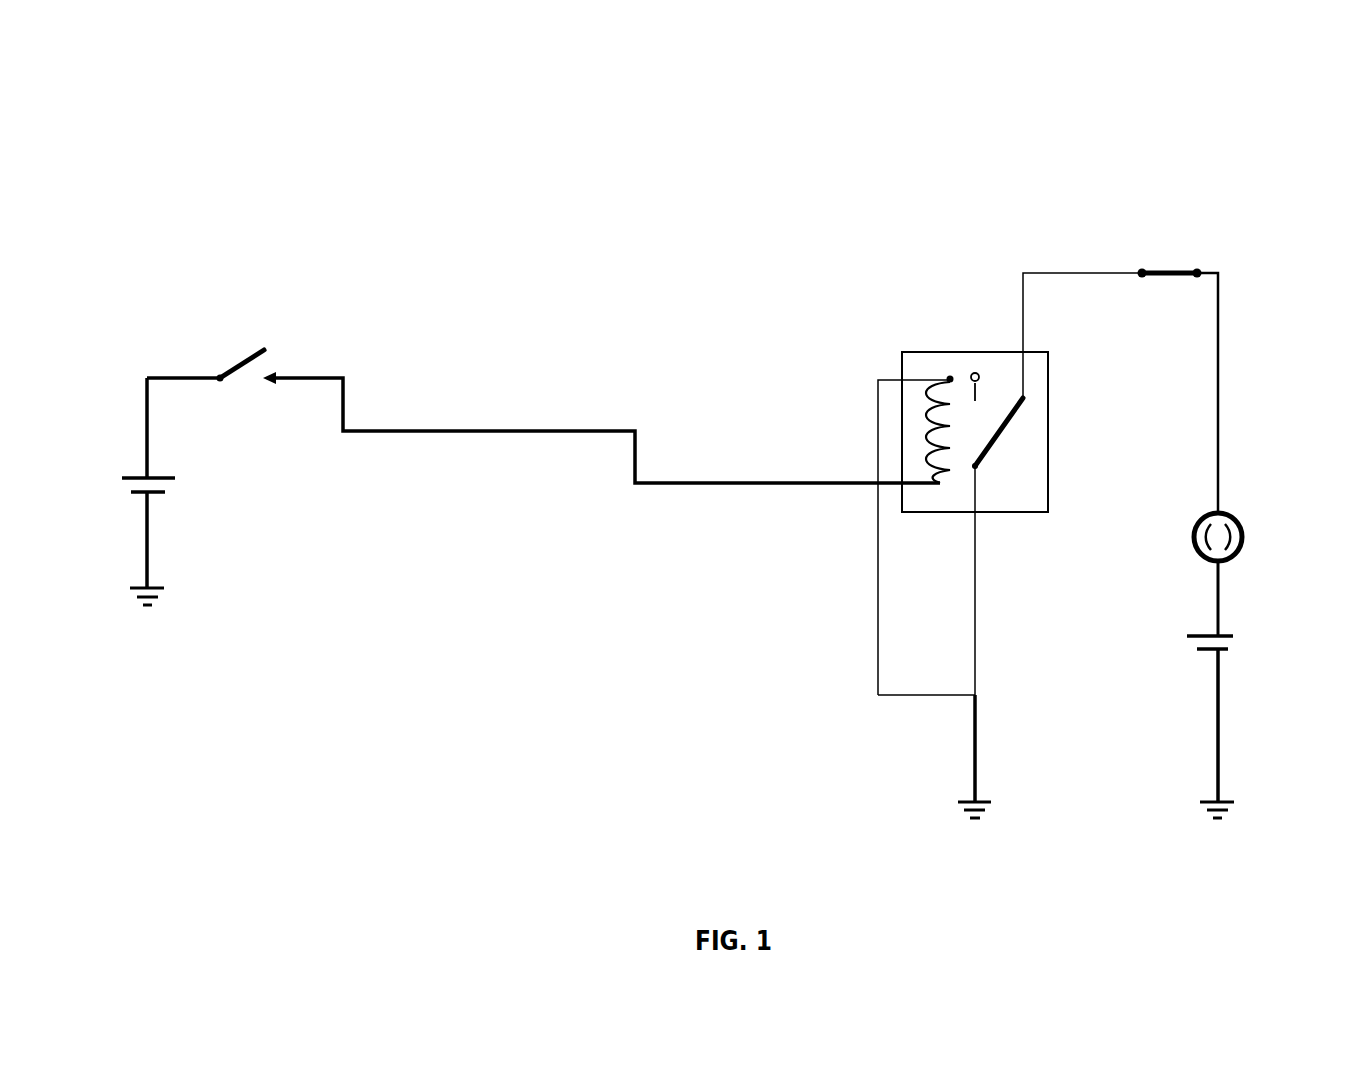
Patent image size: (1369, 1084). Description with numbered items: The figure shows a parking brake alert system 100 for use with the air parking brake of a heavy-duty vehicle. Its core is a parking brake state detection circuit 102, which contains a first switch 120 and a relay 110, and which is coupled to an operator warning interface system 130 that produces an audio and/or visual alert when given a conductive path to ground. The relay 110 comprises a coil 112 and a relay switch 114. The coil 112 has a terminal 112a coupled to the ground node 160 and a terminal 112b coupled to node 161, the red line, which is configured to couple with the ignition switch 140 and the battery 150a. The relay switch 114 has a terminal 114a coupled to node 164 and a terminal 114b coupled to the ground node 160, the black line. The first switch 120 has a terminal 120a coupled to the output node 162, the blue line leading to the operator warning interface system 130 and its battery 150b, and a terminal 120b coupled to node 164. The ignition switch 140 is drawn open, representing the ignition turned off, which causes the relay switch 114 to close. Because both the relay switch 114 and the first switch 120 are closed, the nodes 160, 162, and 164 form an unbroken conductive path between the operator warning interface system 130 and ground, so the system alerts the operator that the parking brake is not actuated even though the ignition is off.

The parking brake alert system 100 is at (627, 897).
The parking brake state detection circuit 102 is at (1207, 69).
The relay 110 is at (940, 352).
The coil 112 is at (940, 428).
The coil terminal 112a is at (948, 378).
The coil terminal 112b is at (892, 485).
The relay switch 114 is at (1000, 440).
The relay switch terminal 114a is at (1023, 398).
The relay switch terminal 114b is at (977, 467).
The first switch 120 is at (1168, 265).
The first switch terminal 120a is at (1199, 270).
The first switch terminal 120b is at (1137, 268).
The operator warning interface system 130 is at (1282, 398).
The ignition switch 140 is at (264, 350).
The battery 150a is at (125, 477).
The battery 150b is at (1225, 640).
The ground node 160 is at (975, 695).
The node 161 is at (596, 430).
The output node 162 is at (1219, 312).
The node 164 is at (1023, 283).